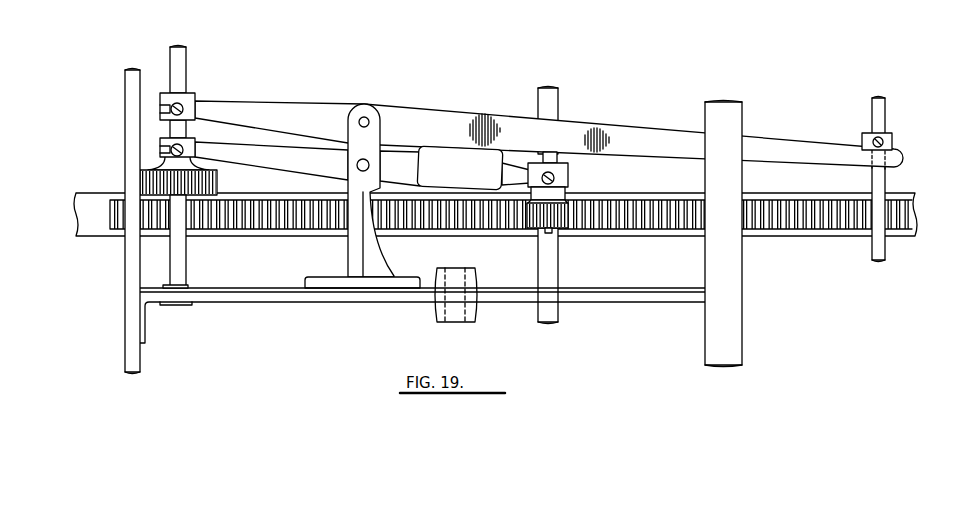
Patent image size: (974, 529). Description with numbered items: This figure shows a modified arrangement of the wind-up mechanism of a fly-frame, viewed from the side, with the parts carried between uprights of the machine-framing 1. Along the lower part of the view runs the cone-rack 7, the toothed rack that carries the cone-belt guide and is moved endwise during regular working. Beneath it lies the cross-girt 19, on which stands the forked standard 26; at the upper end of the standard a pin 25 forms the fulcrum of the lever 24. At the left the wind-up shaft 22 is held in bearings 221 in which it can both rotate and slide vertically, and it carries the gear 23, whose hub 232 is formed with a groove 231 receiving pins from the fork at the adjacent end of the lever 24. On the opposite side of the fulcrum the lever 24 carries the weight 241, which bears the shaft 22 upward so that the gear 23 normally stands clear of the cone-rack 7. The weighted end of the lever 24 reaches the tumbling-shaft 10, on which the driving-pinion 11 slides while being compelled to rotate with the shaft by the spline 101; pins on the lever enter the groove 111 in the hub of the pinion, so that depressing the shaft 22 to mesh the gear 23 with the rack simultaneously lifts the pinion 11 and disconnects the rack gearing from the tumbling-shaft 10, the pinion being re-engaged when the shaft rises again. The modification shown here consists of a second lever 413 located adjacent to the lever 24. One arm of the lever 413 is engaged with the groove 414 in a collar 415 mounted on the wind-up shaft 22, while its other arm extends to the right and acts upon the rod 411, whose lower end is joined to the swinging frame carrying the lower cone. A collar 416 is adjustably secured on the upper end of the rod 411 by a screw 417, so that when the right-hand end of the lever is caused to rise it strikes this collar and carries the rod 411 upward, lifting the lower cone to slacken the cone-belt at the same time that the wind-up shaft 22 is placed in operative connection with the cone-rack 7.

The machine-framing 1 is at (123, 279).
The cone-rack 7 is at (242, 235).
The tumbling-shaft 10 is at (496, 205).
The driving-pinion 11 is at (557, 235).
The cross-girt 19 is at (286, 306).
The wind-up shaft 22 is at (192, 75).
The gear 23 is at (223, 185).
The lever 24 is at (362, 166).
The pin 25 is at (374, 168).
The forked standard 26 is at (349, 253).
The spline 101 is at (560, 160).
The groove 111 is at (573, 181).
The bearings 221 is at (195, 288).
The groove 231 is at (160, 153).
The hub 232 is at (196, 138).
The weight 241 is at (460, 168).
The rod 411 is at (884, 252).
The second lever 413 is at (662, 137).
The groove 414 is at (159, 110).
The collar 415 is at (202, 99).
The collar 416 is at (891, 133).
The screw 417 is at (894, 143).